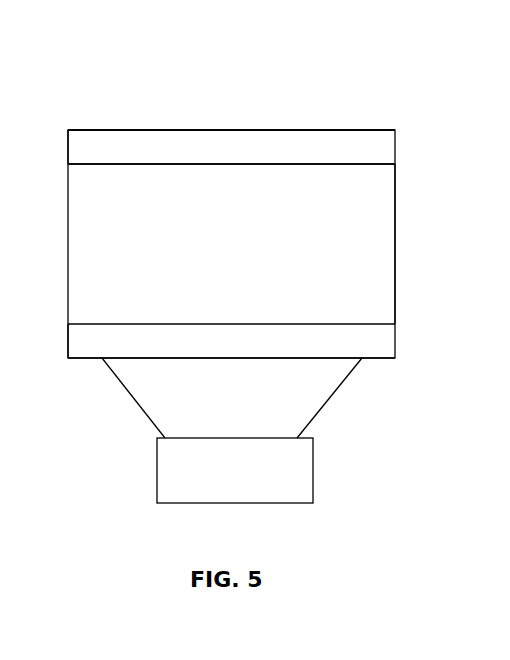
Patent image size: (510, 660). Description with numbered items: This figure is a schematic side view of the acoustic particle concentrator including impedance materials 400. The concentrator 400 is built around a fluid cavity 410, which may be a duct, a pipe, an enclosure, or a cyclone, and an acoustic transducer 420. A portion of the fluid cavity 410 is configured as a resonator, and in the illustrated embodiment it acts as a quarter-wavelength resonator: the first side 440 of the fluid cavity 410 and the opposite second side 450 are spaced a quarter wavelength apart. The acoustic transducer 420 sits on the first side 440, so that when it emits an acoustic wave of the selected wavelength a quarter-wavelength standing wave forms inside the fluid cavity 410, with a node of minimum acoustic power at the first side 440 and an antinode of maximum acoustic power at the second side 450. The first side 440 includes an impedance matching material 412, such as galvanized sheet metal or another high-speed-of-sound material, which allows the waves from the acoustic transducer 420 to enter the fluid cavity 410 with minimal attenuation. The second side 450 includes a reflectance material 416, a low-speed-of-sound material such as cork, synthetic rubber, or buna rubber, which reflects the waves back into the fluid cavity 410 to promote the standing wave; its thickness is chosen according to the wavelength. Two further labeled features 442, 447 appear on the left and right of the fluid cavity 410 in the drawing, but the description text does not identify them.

The acoustic particle concentrator including impedance materials 400 is at (315, 70).
The fluid cavity 410 is at (99, 164).
The impedance matching material 412 is at (380, 358).
The reflectance material 416 is at (365, 130).
The acoustic transducer 420 is at (157, 488).
The first side 440 is at (162, 342).
The left side 442 is at (72, 264).
The right side 447 is at (393, 262).
The second side 450 is at (222, 150).